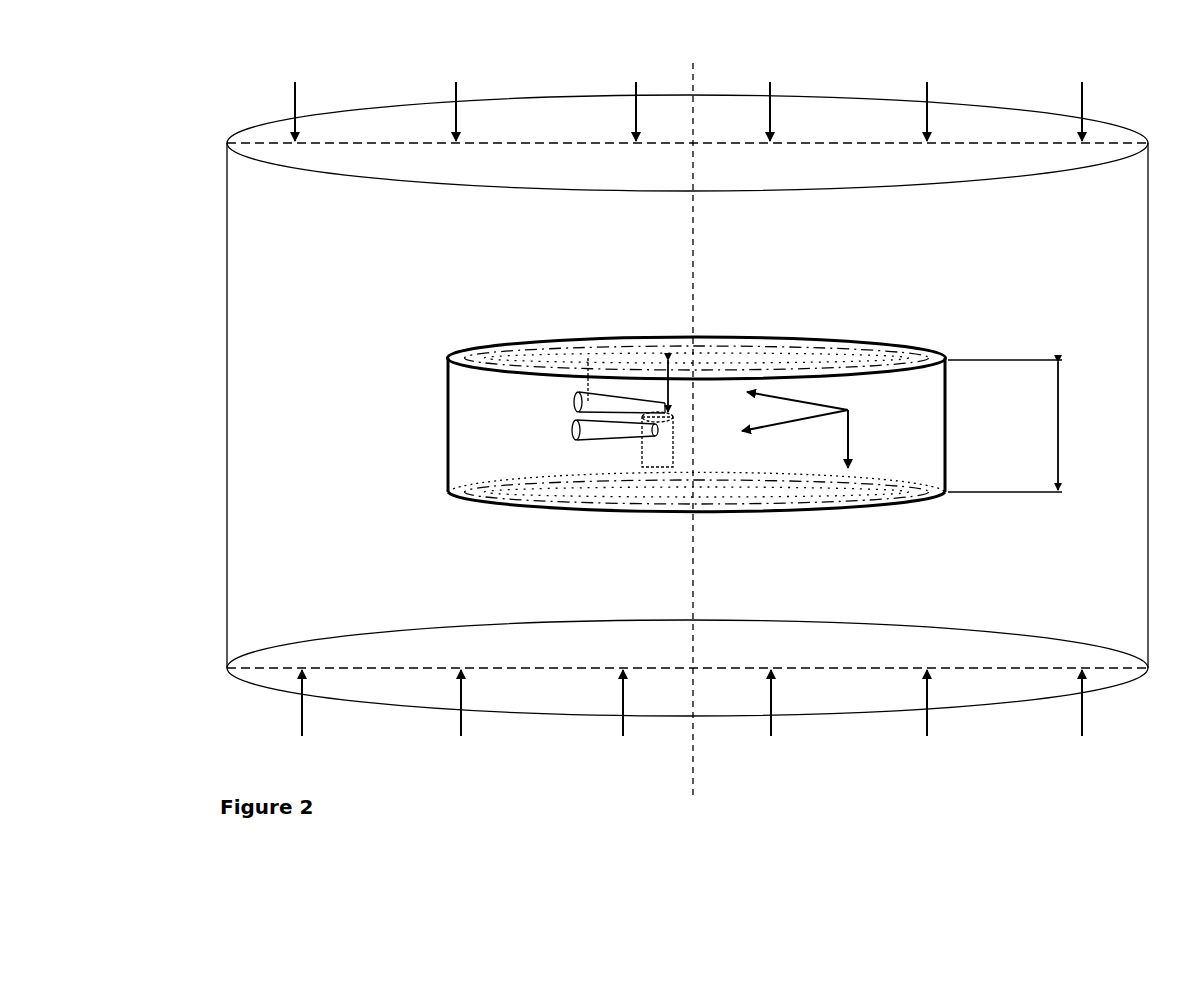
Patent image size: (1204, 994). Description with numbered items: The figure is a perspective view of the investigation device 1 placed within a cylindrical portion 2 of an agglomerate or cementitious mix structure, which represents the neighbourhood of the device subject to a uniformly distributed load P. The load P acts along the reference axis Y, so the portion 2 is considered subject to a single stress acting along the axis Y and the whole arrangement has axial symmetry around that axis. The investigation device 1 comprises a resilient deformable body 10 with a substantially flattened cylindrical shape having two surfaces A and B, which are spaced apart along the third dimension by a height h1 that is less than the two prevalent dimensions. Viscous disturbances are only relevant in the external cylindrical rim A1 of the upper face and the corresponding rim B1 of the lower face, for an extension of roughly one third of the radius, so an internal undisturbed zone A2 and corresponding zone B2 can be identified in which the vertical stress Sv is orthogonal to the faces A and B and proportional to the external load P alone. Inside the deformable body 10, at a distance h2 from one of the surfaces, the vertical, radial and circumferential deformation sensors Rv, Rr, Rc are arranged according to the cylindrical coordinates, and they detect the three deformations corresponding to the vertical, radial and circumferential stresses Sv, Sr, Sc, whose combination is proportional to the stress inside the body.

The investigation device 1 is at (356, 322).
The portion of the agglomerate structure 2 is at (1100, 215).
The resilient deformable body 10 is at (920, 446).
The surface A is at (717, 304).
The external cylindrical rim A1 is at (928, 358).
The undisturbed zone A2 is at (783, 360).
The surface B is at (688, 537).
The external cylindrical rim B1 is at (480, 497).
The undisturbed zone B2 is at (780, 497).
The circumferential deformation sensor Rc is at (592, 395).
The radial deformation sensor Rr is at (576, 430).
The vertical deformation sensor Rv is at (660, 442).
The circumferential stress Sc is at (781, 402).
The radial stress Sr is at (795, 436).
The vertical stress Sv is at (866, 439).
The height h1 is at (1062, 432).
The distance h2 is at (663, 405).
The uniformly distributed load P is at (295, 113).
The reference axis Y is at (697, 105).